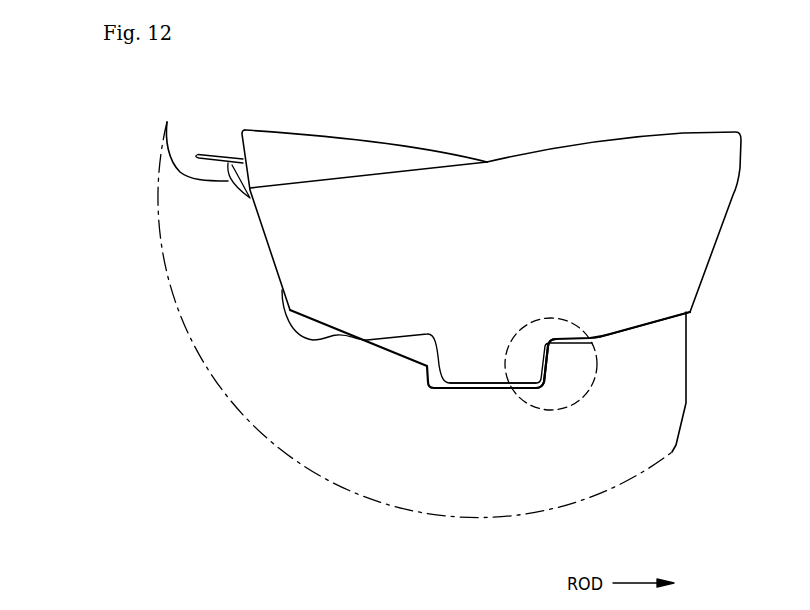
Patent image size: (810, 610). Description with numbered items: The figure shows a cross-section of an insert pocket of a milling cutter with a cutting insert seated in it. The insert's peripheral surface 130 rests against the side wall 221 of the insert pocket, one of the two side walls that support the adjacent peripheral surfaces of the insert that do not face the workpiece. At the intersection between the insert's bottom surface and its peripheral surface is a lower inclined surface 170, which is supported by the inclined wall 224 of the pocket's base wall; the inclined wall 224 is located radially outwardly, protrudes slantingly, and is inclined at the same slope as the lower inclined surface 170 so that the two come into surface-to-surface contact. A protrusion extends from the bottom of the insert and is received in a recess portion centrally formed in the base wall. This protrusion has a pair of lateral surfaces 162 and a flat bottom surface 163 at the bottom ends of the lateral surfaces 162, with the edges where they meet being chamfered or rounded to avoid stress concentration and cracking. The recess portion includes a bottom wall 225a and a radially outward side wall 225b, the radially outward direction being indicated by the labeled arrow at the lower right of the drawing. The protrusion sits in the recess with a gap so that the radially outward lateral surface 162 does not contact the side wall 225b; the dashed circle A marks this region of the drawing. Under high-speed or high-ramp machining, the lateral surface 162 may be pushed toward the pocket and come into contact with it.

The peripheral surface 130 is at (266, 244).
The side wall 221 is at (266, 227).
The lower inclined surface 170 is at (665, 338).
The inclined wall 224 is at (648, 324).
The flat bottom surface 163 is at (477, 383).
The lateral surface 162 is at (513, 388).
The bottom wall 225a is at (445, 384).
The side wall 225b is at (513, 388).
The detail region A is at (598, 386).